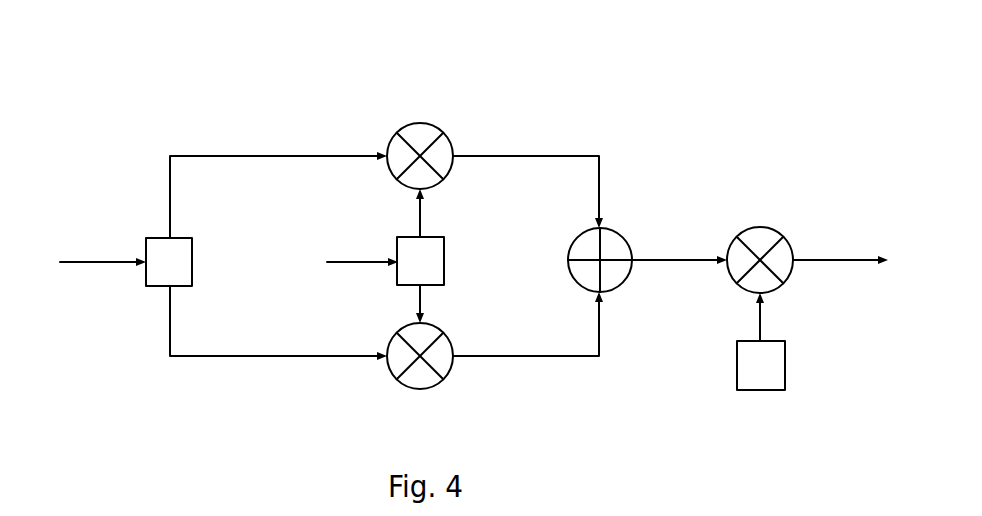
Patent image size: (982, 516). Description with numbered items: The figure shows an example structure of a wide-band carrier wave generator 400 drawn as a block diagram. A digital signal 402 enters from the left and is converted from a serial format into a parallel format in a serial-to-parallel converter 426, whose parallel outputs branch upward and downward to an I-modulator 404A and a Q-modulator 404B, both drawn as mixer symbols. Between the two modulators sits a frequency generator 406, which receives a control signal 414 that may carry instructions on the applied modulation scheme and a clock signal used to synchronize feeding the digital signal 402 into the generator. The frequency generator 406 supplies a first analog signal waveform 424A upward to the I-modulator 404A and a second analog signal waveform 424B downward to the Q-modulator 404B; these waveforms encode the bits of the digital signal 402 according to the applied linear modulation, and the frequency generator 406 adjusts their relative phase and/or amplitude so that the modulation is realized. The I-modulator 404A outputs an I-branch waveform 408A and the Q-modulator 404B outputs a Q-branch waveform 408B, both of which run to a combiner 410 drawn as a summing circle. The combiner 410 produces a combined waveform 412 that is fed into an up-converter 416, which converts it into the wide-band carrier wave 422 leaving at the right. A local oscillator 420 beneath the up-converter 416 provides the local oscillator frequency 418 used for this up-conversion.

The wide-band carrier wave generator 400 is at (152, 59).
The digital signal 402 is at (100, 262).
The I-modulator 404A is at (420, 123).
The Q-modulator 404B is at (420, 389).
The frequency generator 406 is at (444, 262).
The I-branch waveform 408A is at (532, 156).
The Q-branch waveform 408B is at (538, 356).
The combiner 410 is at (578, 236).
The combined waveform 412 is at (672, 260).
The control signal 414 is at (362, 262).
The up-converter 416 is at (760, 227).
The local oscillator frequency 418 is at (760, 318).
The local oscillator 420 is at (785, 365).
The wide-band carrier wave 422 is at (840, 260).
The first analog signal waveform 424A is at (420, 212).
The second analog signal waveform 424B is at (420, 300).
The serial-to-parallel converter 426 is at (192, 262).